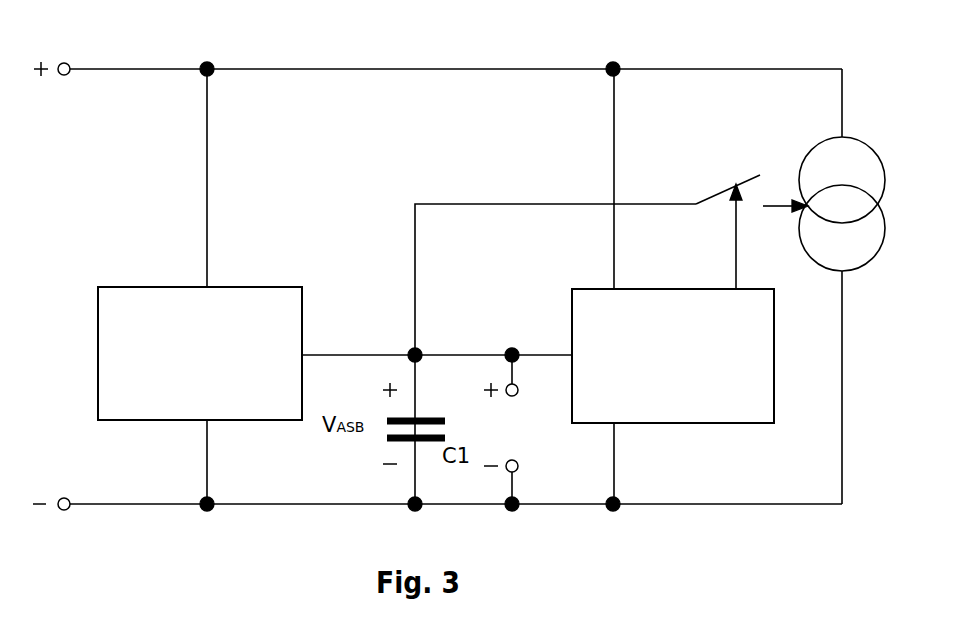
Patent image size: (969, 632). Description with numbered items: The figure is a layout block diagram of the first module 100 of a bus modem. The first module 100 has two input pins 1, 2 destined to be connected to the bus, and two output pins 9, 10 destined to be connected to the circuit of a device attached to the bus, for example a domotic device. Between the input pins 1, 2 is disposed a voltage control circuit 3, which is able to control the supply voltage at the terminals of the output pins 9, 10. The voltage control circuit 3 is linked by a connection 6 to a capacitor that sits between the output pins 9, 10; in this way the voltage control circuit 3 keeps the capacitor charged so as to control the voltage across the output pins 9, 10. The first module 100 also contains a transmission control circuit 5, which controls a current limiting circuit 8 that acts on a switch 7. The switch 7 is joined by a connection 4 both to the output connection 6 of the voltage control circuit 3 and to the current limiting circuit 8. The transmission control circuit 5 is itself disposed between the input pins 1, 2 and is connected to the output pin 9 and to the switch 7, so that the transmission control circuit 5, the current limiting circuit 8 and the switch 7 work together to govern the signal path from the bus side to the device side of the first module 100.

The first module 100 is at (456, 62).
The input pin 1 is at (124, 58).
The input pin 2 is at (120, 492).
The VASB control circuit 3 is at (200, 353).
The connection 4 is at (555, 264).
The transmission control circuit 5 is at (673, 356).
The connection 6 is at (437, 343).
The switch 7 is at (728, 227).
The current limiting circuit 8 is at (824, 204).
The output pin 9 is at (502, 388).
The output pin 10 is at (507, 469).